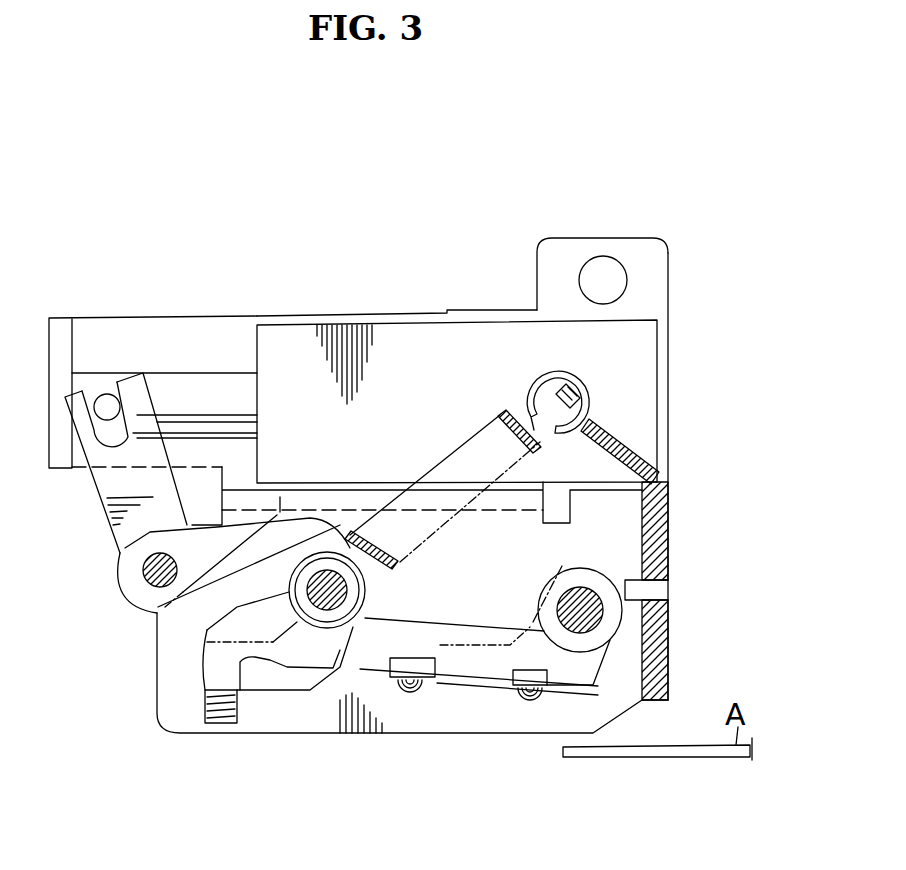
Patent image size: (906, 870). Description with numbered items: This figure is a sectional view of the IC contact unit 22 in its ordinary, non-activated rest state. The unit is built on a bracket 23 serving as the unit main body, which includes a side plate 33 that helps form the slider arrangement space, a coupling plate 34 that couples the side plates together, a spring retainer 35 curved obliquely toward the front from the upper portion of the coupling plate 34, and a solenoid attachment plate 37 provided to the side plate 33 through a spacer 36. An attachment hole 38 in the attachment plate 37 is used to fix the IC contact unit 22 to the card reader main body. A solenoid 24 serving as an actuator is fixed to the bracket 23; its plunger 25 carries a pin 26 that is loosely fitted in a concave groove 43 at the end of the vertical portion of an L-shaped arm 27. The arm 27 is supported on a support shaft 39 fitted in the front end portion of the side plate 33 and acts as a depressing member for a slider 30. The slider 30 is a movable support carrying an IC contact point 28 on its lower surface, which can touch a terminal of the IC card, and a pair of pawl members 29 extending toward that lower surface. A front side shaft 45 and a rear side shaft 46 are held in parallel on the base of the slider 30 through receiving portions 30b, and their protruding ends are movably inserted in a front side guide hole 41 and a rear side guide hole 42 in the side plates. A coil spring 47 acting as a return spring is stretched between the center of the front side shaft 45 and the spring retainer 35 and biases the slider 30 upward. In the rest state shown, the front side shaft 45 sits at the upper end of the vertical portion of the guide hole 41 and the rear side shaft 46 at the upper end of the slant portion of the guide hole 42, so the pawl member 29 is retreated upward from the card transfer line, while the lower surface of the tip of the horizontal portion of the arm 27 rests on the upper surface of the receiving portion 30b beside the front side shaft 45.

The IC contact unit 22 is at (303, 216).
The bracket 23 is at (168, 309).
The solenoid 24 is at (381, 333).
The plunger 25 is at (217, 372).
The pin 26 is at (100, 396).
The L-shaped arm 27 is at (107, 518).
The IC contact point 28 is at (401, 704).
The pawl member 29 is at (212, 727).
The slider 30 is at (441, 620).
The receiving portion 30b is at (366, 590).
The side plate 33 is at (157, 681).
The coupling plate 34 is at (666, 553).
The spring retainer 35 is at (612, 424).
The spacer 36 is at (322, 486).
The solenoid attachment plate 37 is at (440, 311).
The attachment hole 38 is at (606, 256).
The support shaft 39 is at (141, 580).
The front side guide hole 41 is at (255, 693).
The rear side guide hole 42 is at (483, 687).
The concave groove 43 is at (150, 416).
The front side shaft 45 is at (320, 589).
The rear side shaft 46 is at (581, 606).
The coil spring 47 is at (433, 467).